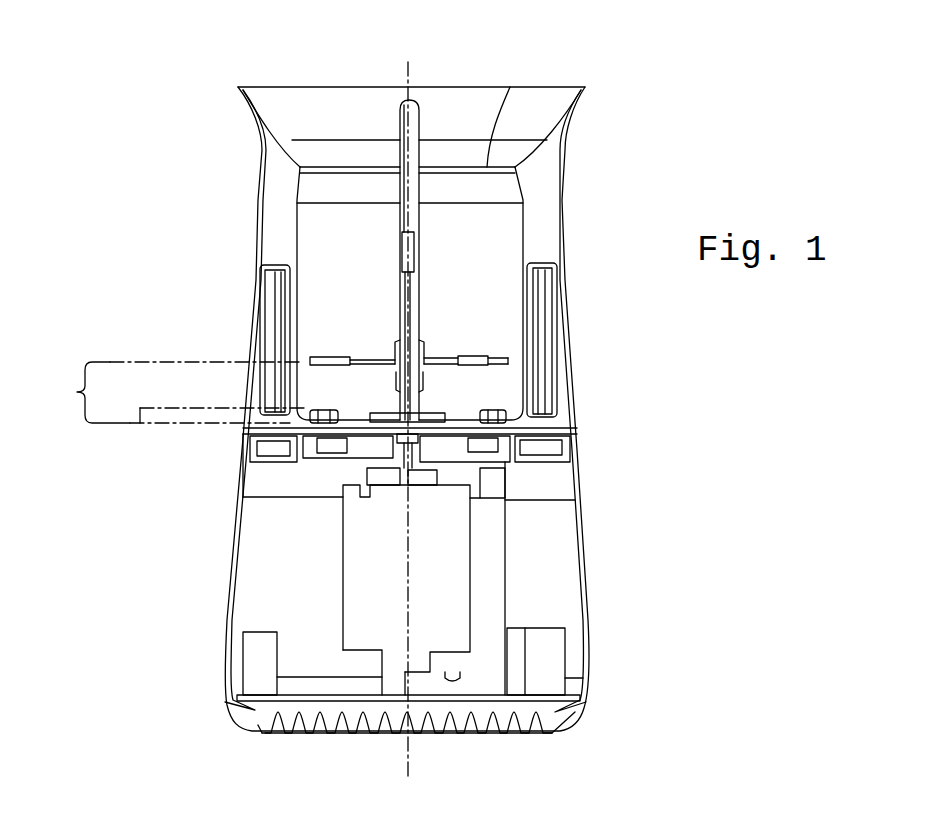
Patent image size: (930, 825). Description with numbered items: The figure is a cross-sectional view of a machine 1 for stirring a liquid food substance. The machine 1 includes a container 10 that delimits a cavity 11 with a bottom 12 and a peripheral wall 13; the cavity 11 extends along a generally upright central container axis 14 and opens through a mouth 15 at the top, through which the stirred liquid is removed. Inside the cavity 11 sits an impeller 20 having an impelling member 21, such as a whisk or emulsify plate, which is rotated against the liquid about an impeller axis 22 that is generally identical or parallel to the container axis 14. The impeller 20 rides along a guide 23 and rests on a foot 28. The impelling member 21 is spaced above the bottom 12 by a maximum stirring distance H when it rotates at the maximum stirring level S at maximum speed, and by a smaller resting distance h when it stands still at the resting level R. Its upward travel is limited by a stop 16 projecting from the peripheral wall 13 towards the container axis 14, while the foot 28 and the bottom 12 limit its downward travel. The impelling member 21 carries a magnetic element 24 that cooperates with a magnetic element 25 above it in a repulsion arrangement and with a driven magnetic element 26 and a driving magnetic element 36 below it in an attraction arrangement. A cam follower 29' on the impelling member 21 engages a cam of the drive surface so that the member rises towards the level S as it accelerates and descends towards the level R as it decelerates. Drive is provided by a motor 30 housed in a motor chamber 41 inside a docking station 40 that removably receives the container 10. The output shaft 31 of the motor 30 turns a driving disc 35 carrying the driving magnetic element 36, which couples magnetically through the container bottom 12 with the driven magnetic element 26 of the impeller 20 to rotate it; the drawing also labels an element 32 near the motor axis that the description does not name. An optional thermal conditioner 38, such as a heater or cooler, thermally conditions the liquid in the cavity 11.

The machine 1 is at (143, 63).
The container 10 is at (250, 118).
The cavity 11 is at (388, 222).
The bottom 12 is at (508, 430).
The peripheral wall 13 is at (297, 232).
The central container axis 14 is at (418, 68).
The mouth 15 is at (268, 86).
The stop 16 is at (300, 168).
The impeller 20 is at (345, 272).
The impelling member 21 is at (442, 360).
The impeller axis 22 is at (410, 305).
The guide 23 is at (413, 212).
The magnetic element 24 is at (337, 358).
The magnetic element 25 is at (410, 238).
The driven magnetic element 26 is at (323, 414).
The foot 28 is at (463, 415).
The cam follower 29' is at (413, 346).
The motor 30 is at (348, 615).
The output shaft 31 is at (405, 467).
The motor shaft 32 is at (408, 543).
The driving disc 35 is at (448, 443).
The driving magnetic element 36 is at (332, 445).
The thermal conditioner 38 is at (267, 302).
The docking station 40 is at (590, 623).
The motor chamber 41 is at (243, 585).
The maximum stirring level S is at (205, 362).
The maximum stirring distance H is at (65, 392).
The resting distance h is at (140, 408).
The resting level R is at (220, 408).